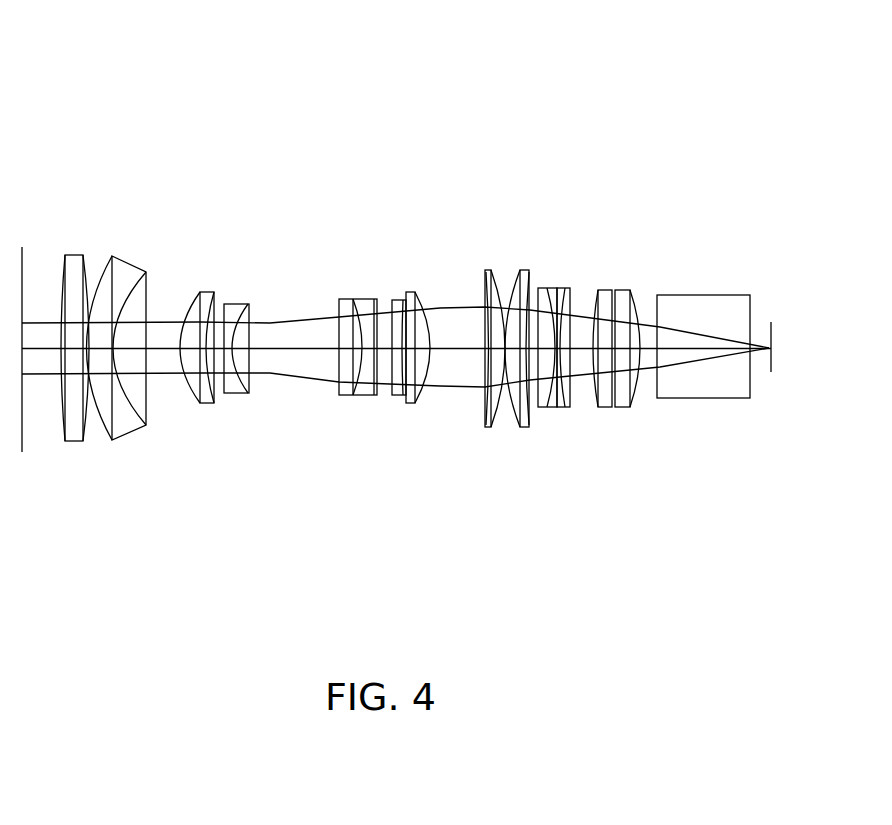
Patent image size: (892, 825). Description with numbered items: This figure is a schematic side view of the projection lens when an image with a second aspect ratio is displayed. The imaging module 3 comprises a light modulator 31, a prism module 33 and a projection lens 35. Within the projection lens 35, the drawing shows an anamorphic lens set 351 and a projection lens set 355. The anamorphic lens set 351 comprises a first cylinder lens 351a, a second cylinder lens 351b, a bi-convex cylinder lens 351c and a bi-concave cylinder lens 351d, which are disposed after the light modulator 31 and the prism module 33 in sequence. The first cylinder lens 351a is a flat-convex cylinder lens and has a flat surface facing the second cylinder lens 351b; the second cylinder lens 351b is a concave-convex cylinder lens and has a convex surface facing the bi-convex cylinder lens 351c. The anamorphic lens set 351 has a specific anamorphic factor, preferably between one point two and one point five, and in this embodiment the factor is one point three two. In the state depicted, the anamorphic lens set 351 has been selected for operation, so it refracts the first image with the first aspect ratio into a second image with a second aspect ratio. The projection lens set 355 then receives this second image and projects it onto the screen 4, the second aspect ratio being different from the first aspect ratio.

The imaging module 3 is at (750, 53).
The projection lens 35 is at (592, 103).
The anamorphic lens set 351 is at (523, 150).
The first cylinder lens 351a is at (625, 290).
The second cylinder lens 351b is at (603, 290).
The bi-convex cylinder lens 351c is at (563, 288).
The bi-concave cylinder lens 351d is at (542, 287).
The projection lens set 355 is at (530, 245).
The prism module 33 is at (705, 307).
The light modulator 31 is at (772, 323).
The screen 4 is at (22, 444).